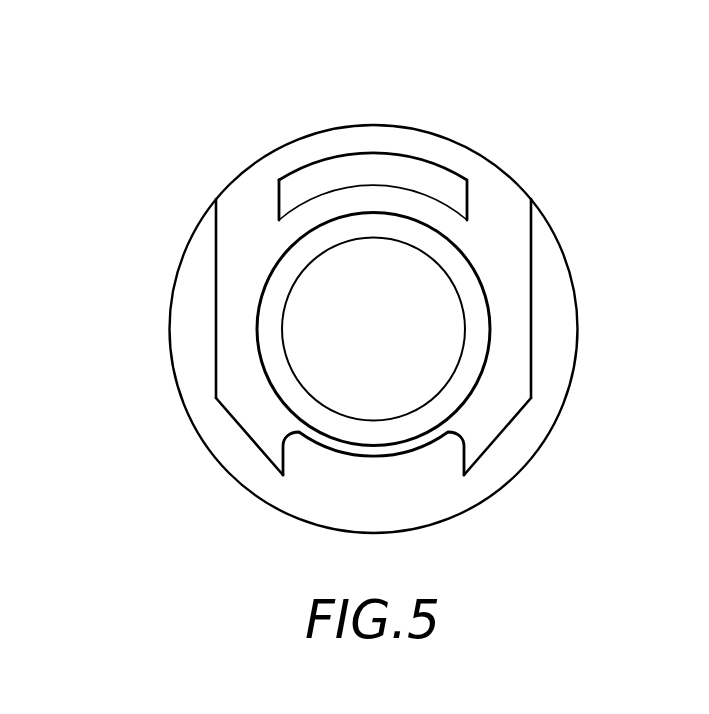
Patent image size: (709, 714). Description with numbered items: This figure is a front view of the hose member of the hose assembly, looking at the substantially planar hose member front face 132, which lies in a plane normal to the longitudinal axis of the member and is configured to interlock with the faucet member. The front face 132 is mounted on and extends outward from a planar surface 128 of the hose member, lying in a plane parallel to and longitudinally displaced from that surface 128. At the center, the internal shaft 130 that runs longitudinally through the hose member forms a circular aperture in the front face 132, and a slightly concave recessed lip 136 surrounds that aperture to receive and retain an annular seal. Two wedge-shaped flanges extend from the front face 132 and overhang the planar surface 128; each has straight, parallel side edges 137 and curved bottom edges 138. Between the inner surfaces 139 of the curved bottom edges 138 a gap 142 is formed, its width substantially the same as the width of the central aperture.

The planar surface 128 is at (543, 262).
The internal shaft 130 is at (396, 289).
The hose member front face 132 is at (488, 195).
The recessed lip 136 is at (280, 268).
The side edges 137 is at (215, 283).
The curved bottom edges 138 is at (231, 428).
The inner surfaces 139 is at (286, 474).
The gap 142 is at (456, 464).